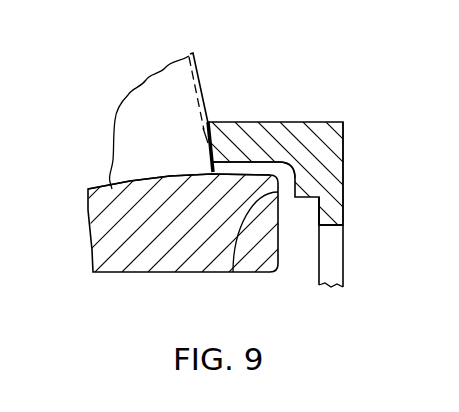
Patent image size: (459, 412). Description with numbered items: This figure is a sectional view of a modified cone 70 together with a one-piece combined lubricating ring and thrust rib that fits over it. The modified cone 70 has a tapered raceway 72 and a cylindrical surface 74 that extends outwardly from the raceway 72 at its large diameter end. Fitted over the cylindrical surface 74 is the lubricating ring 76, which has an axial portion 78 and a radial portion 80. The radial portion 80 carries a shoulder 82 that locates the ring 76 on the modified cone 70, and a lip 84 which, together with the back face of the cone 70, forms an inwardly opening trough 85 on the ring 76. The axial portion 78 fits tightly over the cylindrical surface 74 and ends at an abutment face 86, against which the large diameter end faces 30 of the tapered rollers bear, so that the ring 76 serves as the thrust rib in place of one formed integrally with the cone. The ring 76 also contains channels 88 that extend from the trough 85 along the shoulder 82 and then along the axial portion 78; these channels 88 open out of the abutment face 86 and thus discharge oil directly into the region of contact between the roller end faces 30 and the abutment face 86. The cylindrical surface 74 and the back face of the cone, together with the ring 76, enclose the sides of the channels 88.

The spherical end face 30 is at (198, 63).
The modified cone 70 is at (176, 280).
The tapered raceway 72 is at (132, 181).
The cylindrical surface 74 is at (232, 160).
The lubricating ring 76 is at (350, 150).
The axial portion 78 is at (238, 133).
The radial portion 80 is at (322, 178).
The shoulder 82 is at (234, 272).
The lip 84 is at (333, 215).
The trough 85 is at (302, 212).
The abutment face 86 is at (208, 143).
The channels 88 is at (283, 162).